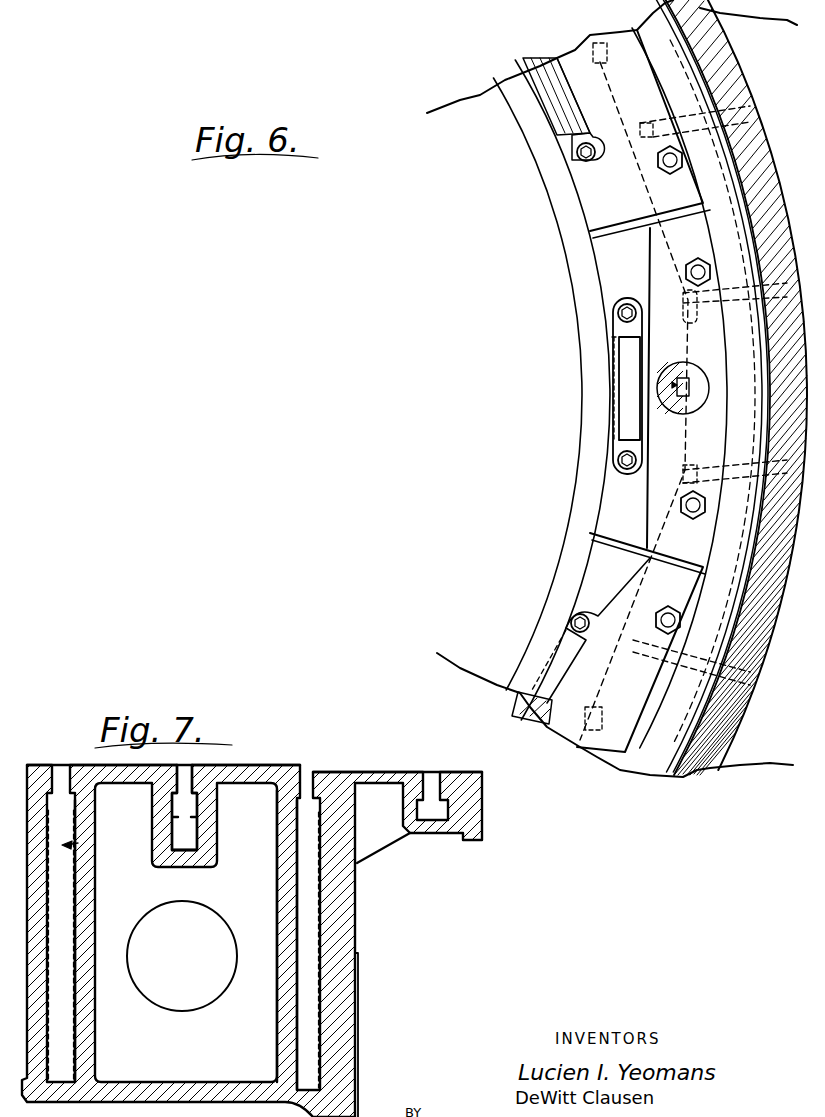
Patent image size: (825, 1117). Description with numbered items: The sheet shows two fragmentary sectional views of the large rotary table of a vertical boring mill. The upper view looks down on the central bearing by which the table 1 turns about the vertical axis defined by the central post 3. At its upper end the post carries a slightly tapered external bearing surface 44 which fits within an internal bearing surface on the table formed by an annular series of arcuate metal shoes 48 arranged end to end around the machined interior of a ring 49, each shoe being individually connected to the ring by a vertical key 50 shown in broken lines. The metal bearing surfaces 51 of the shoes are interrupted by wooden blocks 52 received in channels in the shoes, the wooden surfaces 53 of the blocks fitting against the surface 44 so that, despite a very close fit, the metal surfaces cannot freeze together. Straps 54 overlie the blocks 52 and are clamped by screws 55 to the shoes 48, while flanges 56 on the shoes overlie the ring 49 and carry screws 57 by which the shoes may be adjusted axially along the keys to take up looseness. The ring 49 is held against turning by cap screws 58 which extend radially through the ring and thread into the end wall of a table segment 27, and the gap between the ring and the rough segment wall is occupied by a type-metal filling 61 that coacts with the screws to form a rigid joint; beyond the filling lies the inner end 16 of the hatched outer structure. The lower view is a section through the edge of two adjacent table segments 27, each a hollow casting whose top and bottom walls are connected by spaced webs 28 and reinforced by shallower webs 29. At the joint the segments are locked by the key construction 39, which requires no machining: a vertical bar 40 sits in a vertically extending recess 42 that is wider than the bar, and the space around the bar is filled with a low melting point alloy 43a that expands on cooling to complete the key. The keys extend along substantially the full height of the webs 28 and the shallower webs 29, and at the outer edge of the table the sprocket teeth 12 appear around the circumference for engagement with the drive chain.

In FIG. 6, the table 1 is at (758, 600).
In FIG. 7, the table 1 is at (342, 925).
In FIG. 6, the central post 3 is at (506, 78).
In FIG. 7, the sprocket teeth 12 is at (358, 990).
In FIG. 6, the inner end 16 is at (748, 116).
In FIG. 7, the table segment 27 is at (245, 771).
In FIG. 7, the web 28 is at (88, 1035).
In FIG. 7, the shallower web 29 is at (200, 858).
In FIG. 7, the key construction 39 is at (174, 832).
In FIG. 7, the vertical bar 40 is at (182, 852).
In FIG. 7, the recess 42 is at (72, 998).
In FIG. 7, the low melting point alloy 43a is at (195, 832).
In FIG. 6, the external bearing surface 44 is at (590, 213).
In FIG. 6, the arcuate metal shoe 48 is at (612, 518).
In FIG. 6, the ring 49 is at (700, 412).
In FIG. 6, the vertical key 50 is at (607, 60).
In FIG. 6, the bearing surface of shoe 51 is at (598, 270).
In FIG. 6, the wooden block 52 is at (556, 112).
In FIG. 6, the wooden bearing surface 53 is at (562, 125).
In FIG. 6, the strap 54 is at (572, 143).
In FIG. 6, the screw 55 is at (591, 160).
In FIG. 6, the flange 56 is at (700, 230).
In FIG. 6, the adjusting screw 57 is at (710, 271).
In FIG. 6, the cap screw 58 is at (690, 115).
In FIG. 6, the filling 61 is at (735, 163).